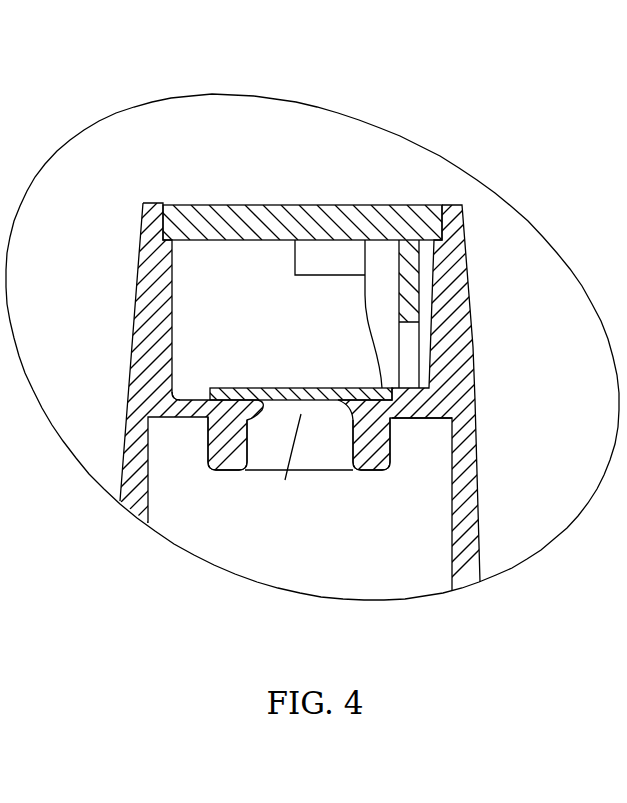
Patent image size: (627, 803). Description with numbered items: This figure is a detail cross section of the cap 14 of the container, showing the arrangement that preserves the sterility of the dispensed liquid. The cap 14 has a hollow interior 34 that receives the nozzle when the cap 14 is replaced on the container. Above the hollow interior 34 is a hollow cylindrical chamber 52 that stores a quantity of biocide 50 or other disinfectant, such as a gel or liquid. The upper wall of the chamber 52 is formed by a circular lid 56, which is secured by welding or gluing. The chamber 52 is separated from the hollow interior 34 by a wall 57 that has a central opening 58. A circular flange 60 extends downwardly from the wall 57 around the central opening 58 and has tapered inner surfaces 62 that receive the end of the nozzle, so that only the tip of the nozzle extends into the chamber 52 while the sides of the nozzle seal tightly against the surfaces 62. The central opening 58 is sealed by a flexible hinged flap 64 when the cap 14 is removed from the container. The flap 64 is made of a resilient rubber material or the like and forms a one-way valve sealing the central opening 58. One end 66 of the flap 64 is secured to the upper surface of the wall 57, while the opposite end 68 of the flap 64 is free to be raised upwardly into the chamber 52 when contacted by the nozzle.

The cap 14 is at (473, 514).
The hollow interior 34 is at (302, 559).
The biocide 50 is at (238, 295).
The hollow cylindrical chamber 52 is at (173, 276).
The circular lid 56 is at (243, 208).
The wall 57 is at (417, 418).
The central opening 58 is at (308, 431).
The circular flange 60 is at (229, 468).
The tapered inner surfaces 62 is at (342, 420).
The flexible hinged flap 64 is at (233, 380).
The end of flap 66 is at (396, 393).
The opposite end of flap 68 is at (210, 387).